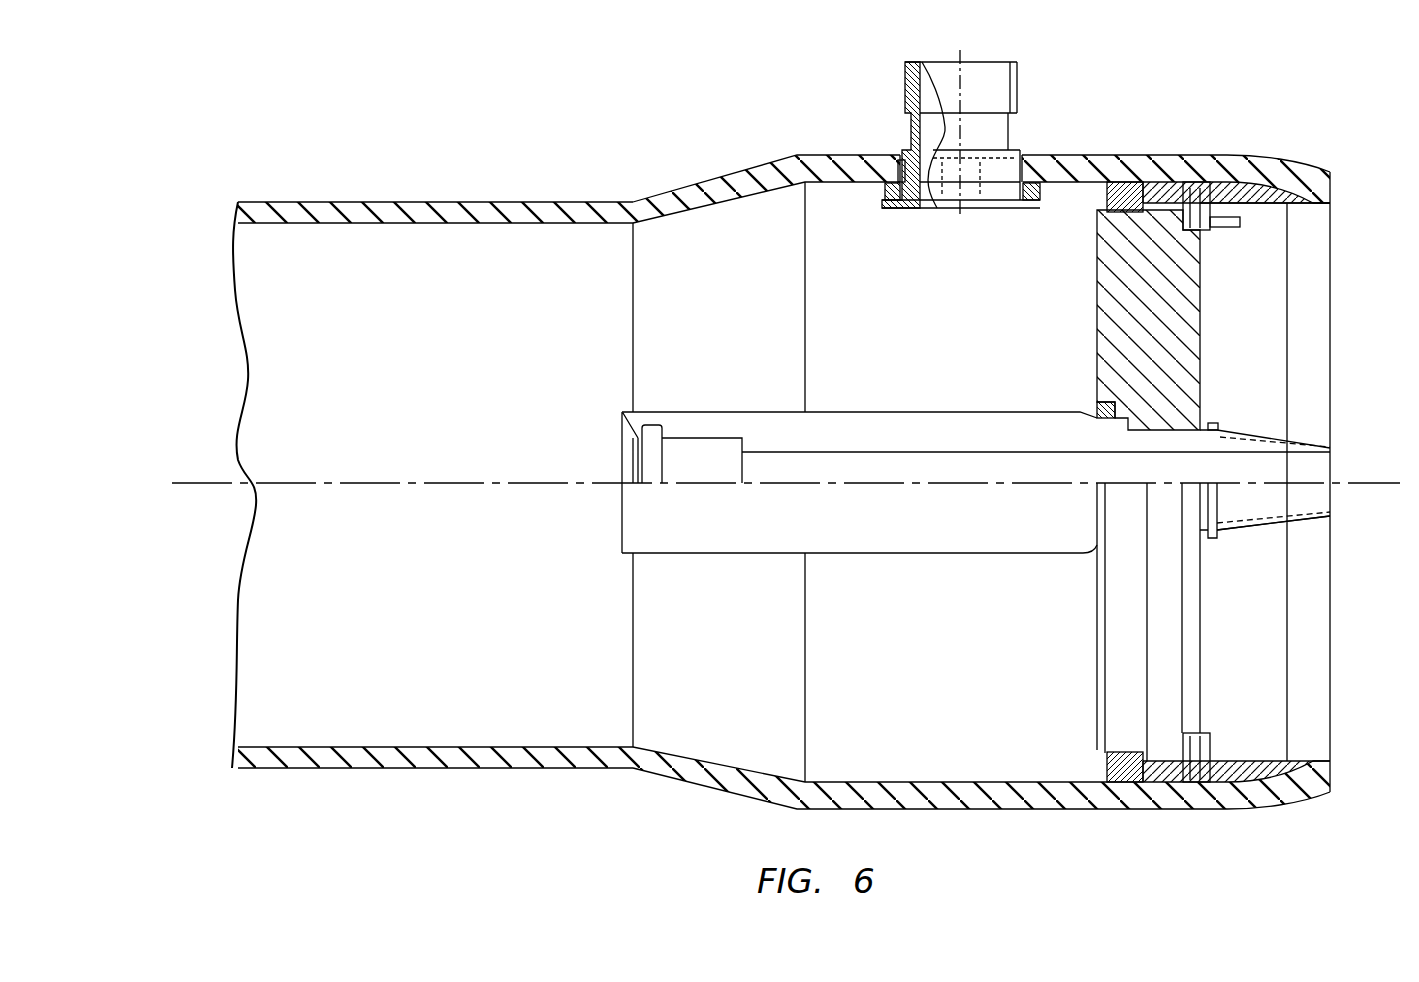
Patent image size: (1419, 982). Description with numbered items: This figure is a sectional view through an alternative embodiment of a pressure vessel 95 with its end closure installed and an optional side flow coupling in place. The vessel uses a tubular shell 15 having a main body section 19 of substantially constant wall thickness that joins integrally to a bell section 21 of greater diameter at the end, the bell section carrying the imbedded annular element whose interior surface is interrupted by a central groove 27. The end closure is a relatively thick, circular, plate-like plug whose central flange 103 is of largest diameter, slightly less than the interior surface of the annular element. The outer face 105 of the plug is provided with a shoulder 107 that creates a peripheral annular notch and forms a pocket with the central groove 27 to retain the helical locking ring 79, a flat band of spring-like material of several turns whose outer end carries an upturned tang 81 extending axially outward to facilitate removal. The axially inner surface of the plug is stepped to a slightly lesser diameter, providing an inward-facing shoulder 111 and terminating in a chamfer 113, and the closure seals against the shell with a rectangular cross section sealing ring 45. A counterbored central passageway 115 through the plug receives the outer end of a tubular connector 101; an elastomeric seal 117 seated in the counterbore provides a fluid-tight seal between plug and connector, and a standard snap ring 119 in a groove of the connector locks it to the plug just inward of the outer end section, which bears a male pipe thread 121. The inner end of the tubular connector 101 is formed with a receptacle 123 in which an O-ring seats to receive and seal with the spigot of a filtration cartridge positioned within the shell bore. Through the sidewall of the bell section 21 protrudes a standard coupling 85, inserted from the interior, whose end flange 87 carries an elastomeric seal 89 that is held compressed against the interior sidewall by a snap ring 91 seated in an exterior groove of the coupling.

The pressure vessel 95 is at (517, 132).
The main body section 19 is at (395, 212).
The tubular shell 15 is at (435, 768).
The bell section 21 is at (953, 798).
The central groove 27 is at (1260, 180).
The tang 81 is at (1330, 222).
The coupling 85 is at (900, 157).
The snap ring 91 is at (897, 158).
The elastomeric seal 89 is at (880, 188).
The end flange 87 is at (1010, 213).
The shoulder 111 is at (1175, 183).
The chamfer 113 is at (1105, 214).
The shoulder 107 is at (1207, 228).
The outer face 105 is at (1200, 338).
The elastomeric seal 117 is at (1097, 408).
The central passageway 115 is at (1182, 412).
The tubular connector 101 is at (948, 538).
The receptacle 123 is at (677, 462).
The snap ring 119 is at (1207, 537).
The male pipe thread 121 is at (1300, 515).
The central flange 103 is at (1167, 642).
The helical locking ring 79 is at (1210, 753).
The sealing ring 45 is at (1103, 767).